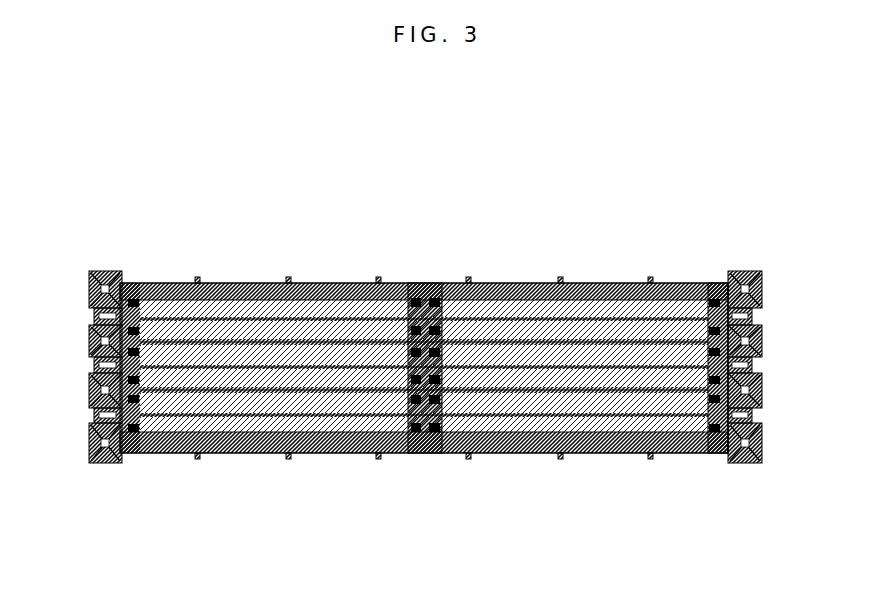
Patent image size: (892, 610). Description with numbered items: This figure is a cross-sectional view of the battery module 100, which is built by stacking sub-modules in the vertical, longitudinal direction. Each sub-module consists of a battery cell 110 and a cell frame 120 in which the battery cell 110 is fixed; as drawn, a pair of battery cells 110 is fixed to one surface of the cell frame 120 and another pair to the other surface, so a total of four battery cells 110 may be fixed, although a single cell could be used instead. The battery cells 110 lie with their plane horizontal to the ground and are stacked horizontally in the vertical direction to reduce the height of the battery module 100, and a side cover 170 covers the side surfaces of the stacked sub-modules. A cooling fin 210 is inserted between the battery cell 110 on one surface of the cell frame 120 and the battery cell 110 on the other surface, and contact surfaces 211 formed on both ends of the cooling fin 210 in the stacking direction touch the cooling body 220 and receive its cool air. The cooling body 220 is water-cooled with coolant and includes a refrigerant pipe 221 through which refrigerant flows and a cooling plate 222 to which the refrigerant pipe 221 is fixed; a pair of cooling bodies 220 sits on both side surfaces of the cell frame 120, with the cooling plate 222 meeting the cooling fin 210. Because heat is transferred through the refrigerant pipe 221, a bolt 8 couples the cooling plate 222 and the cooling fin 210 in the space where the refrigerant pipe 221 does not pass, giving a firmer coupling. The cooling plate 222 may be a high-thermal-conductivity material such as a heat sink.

The battery module 100 is at (612, 160).
The battery cell 110 is at (242, 284).
The cell frame 120 is at (432, 284).
The side cover 170 is at (766, 340).
The cooling fin 210 is at (345, 284).
The contact surface 211 is at (128, 454).
The cooling body 220 is at (700, 538).
The refrigerant pipe 221 is at (753, 462).
The cooling plate 222 is at (718, 456).
The bolt 8 is at (98, 416).